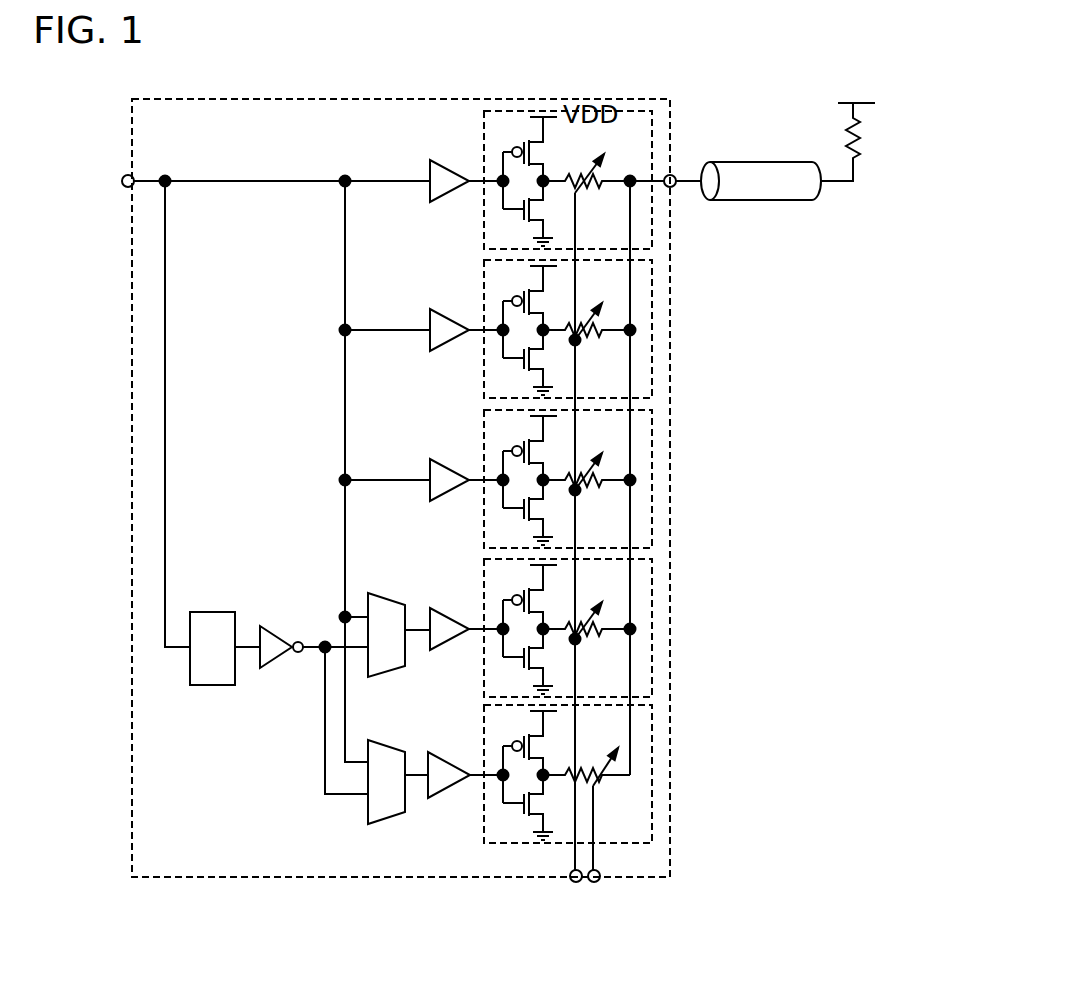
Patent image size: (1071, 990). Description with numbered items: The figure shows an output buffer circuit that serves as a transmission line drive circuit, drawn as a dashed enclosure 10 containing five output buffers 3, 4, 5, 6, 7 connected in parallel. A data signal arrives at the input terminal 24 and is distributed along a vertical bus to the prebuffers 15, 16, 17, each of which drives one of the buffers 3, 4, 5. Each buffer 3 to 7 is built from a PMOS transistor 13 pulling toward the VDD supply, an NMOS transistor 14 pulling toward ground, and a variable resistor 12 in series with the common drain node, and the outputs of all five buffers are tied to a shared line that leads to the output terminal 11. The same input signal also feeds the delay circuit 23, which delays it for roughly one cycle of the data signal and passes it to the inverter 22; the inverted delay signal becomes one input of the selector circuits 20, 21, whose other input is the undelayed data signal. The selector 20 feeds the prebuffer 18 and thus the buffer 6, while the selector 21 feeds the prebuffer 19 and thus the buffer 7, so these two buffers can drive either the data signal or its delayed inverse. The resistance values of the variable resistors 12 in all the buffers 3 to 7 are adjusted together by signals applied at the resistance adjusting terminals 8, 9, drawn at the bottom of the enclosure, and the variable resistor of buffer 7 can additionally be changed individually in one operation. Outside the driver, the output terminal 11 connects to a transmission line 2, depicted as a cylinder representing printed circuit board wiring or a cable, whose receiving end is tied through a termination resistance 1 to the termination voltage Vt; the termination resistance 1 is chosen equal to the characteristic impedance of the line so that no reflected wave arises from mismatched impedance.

The termination resistance 1 is at (857, 150).
The transmission line 2 is at (748, 200).
The buffer 3 is at (581, 181).
The buffer 4 is at (653, 331).
The buffer 5 is at (653, 464).
The buffer 6 is at (653, 618).
The buffer 7 is at (653, 773).
The resistance adjusting terminal 8 is at (598, 883).
The resistance adjusting terminal 9 is at (572, 883).
The output driver circuit 10 is at (290, 877).
The output terminal 11 is at (673, 170).
The variable resistor 12 is at (613, 139).
The PMOS transistor 13 is at (495, 127).
The NMOS transistor 14 is at (495, 235).
The prebuffer 15 is at (447, 200).
The prebuffer 16 is at (447, 350).
The prebuffer 17 is at (447, 500).
The prebuffer 18 is at (440, 650).
The prebuffer 19 is at (452, 797).
The selector circuit 20 is at (370, 592).
The selector circuit 21 is at (370, 742).
The inverter 22 is at (292, 663).
The delay circuit 23 is at (218, 685).
The input terminal 24 is at (126, 190).